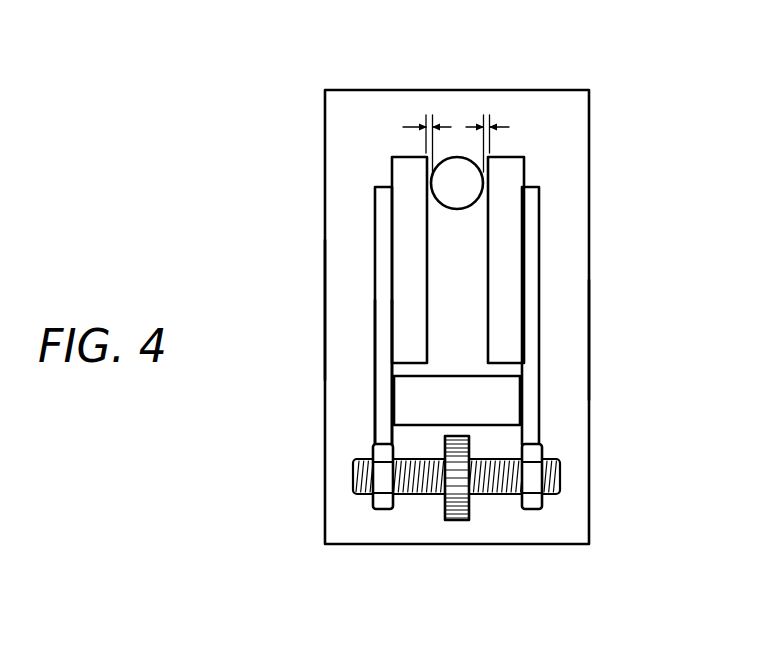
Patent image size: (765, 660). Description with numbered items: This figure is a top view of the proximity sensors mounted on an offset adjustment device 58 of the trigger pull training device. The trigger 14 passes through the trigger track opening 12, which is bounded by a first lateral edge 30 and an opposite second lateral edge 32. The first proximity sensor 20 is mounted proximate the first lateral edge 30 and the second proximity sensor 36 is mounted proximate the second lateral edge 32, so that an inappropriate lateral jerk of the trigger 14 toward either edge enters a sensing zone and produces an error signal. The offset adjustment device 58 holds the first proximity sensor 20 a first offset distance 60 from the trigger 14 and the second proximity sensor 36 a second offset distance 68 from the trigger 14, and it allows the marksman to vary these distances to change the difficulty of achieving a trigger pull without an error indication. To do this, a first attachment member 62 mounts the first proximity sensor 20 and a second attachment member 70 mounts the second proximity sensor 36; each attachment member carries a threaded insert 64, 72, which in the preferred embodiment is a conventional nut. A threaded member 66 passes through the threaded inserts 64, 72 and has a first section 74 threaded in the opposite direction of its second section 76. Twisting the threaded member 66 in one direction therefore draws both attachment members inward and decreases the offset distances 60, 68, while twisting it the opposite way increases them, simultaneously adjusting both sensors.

The trigger track opening 12 is at (325, 458).
The trigger 14 is at (463, 185).
The first proximity sensor 20 is at (417, 186).
The first lateral edge 30 is at (325, 312).
The second lateral edge 32 is at (590, 342).
The second proximity sensor 36 is at (510, 327).
The offset adjustment device 58 is at (363, 275).
The first offset distance 60 is at (428, 113).
The first attachment member 62 is at (385, 370).
The threaded insert 64 is at (380, 500).
The threaded member 66 is at (408, 497).
The second offset distance 68 is at (485, 113).
The guide rail 70 is at (531, 280).
The threaded insert 72 is at (538, 502).
The first section 74 is at (435, 495).
The second section 76 is at (495, 497).